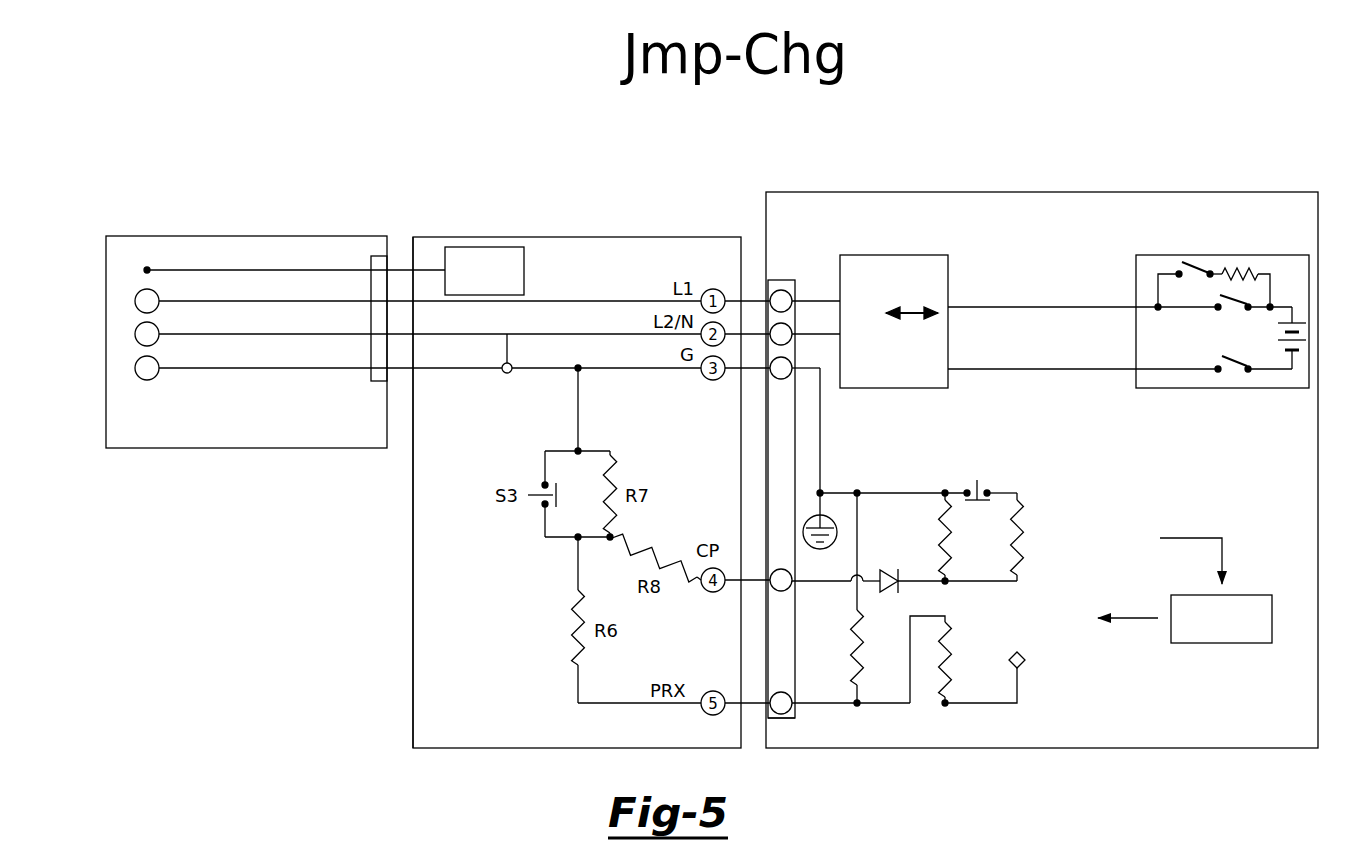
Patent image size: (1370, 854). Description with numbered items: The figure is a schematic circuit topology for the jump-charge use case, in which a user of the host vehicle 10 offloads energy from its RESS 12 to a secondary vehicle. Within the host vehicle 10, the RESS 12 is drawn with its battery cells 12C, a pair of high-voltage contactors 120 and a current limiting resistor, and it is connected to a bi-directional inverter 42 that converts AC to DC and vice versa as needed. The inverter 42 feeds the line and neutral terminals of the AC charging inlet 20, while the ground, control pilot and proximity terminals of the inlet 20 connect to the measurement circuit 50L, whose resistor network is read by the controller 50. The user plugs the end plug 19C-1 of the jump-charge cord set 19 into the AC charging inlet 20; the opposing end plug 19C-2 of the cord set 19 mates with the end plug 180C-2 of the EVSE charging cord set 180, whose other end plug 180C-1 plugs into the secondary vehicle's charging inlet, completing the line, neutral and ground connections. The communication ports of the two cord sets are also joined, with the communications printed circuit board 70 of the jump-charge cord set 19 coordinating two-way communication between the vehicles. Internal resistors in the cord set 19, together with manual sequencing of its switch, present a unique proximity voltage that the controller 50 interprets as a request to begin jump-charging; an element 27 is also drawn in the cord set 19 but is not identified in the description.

The end plug 180C-1 is at (188, 209).
The end plug 180C-2 is at (367, 262).
The EVSE charging cord set 180 is at (309, 172).
The jump-charge cord set 19 is at (643, 173).
The end plug 19C-1 is at (746, 250).
The end plug 19C-2 is at (407, 434).
The communications printed circuit board 70 is at (486, 247).
The switch 27 is at (500, 347).
The host vehicle 10 is at (1043, 192).
The AC charging inlet 20 is at (781, 718).
The bi-directional inverter 42 is at (911, 388).
The RESS 12 is at (1223, 255).
The high-voltage contactors 120 is at (1200, 256).
The battery cells 12C is at (1324, 328).
The measurement circuit 50L is at (1053, 495).
The controller 50 is at (1222, 643).